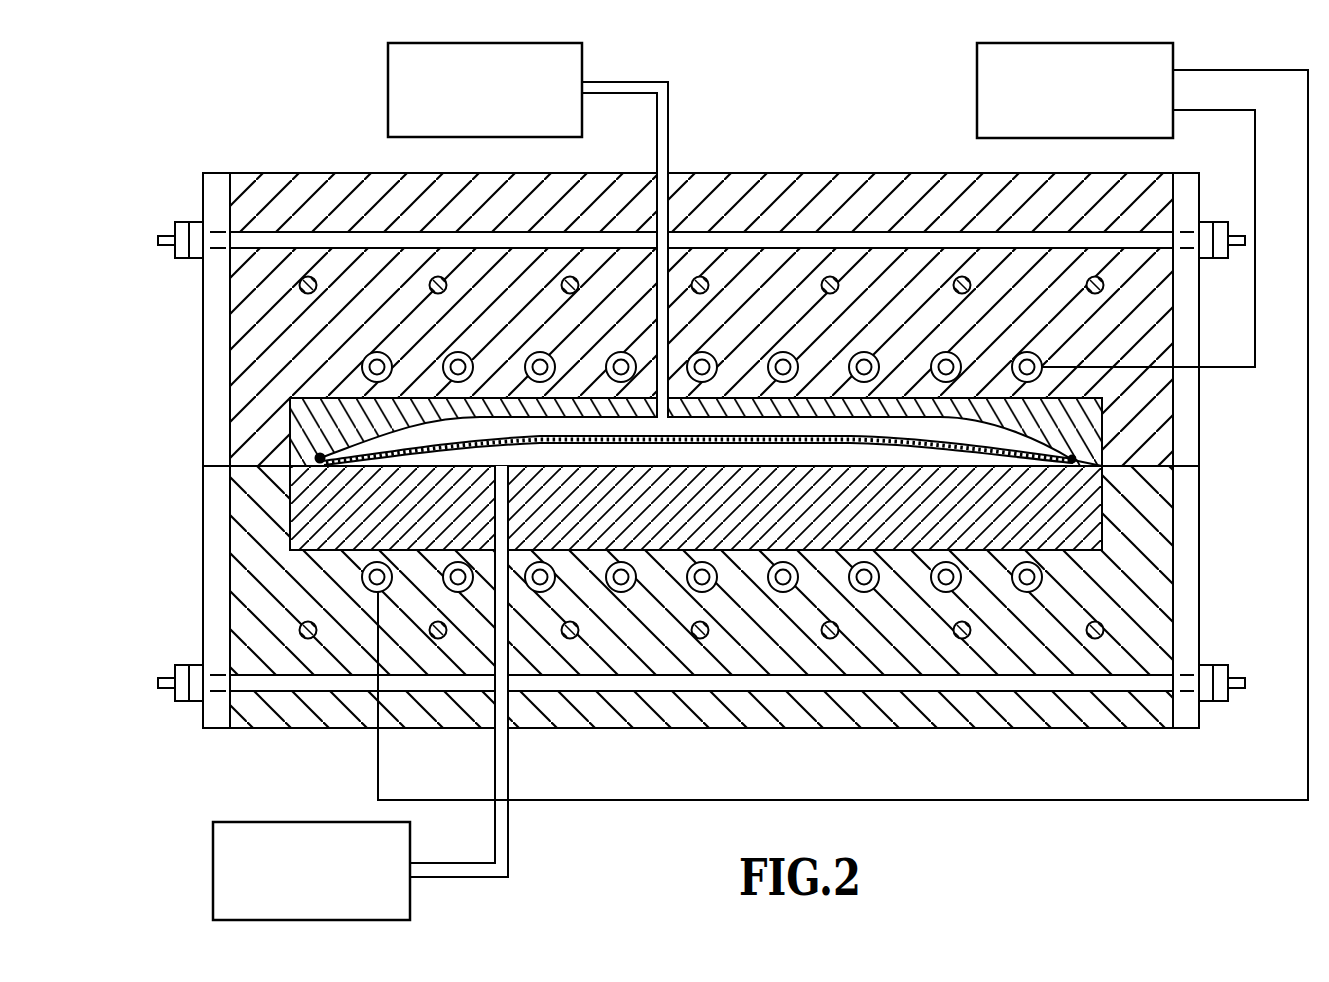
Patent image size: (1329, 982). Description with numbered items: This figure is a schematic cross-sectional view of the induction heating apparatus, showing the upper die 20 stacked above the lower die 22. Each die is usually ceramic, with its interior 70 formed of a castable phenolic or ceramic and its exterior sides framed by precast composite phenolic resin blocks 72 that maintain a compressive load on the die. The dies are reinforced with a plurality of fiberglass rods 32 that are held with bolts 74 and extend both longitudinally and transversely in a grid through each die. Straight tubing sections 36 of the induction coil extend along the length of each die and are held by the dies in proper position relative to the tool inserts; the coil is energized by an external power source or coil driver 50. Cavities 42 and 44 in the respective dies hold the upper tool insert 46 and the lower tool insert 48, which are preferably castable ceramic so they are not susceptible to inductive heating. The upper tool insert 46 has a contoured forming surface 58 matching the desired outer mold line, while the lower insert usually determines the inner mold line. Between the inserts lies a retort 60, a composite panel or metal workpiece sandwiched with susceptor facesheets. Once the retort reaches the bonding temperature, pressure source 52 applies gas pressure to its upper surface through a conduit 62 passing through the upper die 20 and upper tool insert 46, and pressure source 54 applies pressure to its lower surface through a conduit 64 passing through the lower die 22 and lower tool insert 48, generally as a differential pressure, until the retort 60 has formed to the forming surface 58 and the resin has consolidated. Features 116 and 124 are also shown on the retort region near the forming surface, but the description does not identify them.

The upper die 20 is at (781, 155).
The lower die 22 is at (1068, 752).
The fiberglass rods 32 is at (280, 237).
The straight tubing section 36 is at (377, 352).
The cavity 42 is at (1045, 418).
The cavity 44 is at (1105, 500).
The upper tool insert 46 is at (313, 417).
The lower tool insert 48 is at (300, 530).
The coil driver 50 is at (977, 90).
The pressure source 52 is at (388, 90).
The pressure source 54 is at (213, 870).
The contoured forming surface 58 is at (1032, 445).
The retort 60 is at (1045, 470).
The conduit 62 is at (672, 146).
The conduit 64 is at (508, 834).
The interior of the dies 70 is at (316, 175).
The phenolic reinforcement 72 is at (218, 338).
The bolts 74 is at (180, 258).
The conductive coating 116 is at (1070, 456).
The clamp point 124 is at (318, 458).